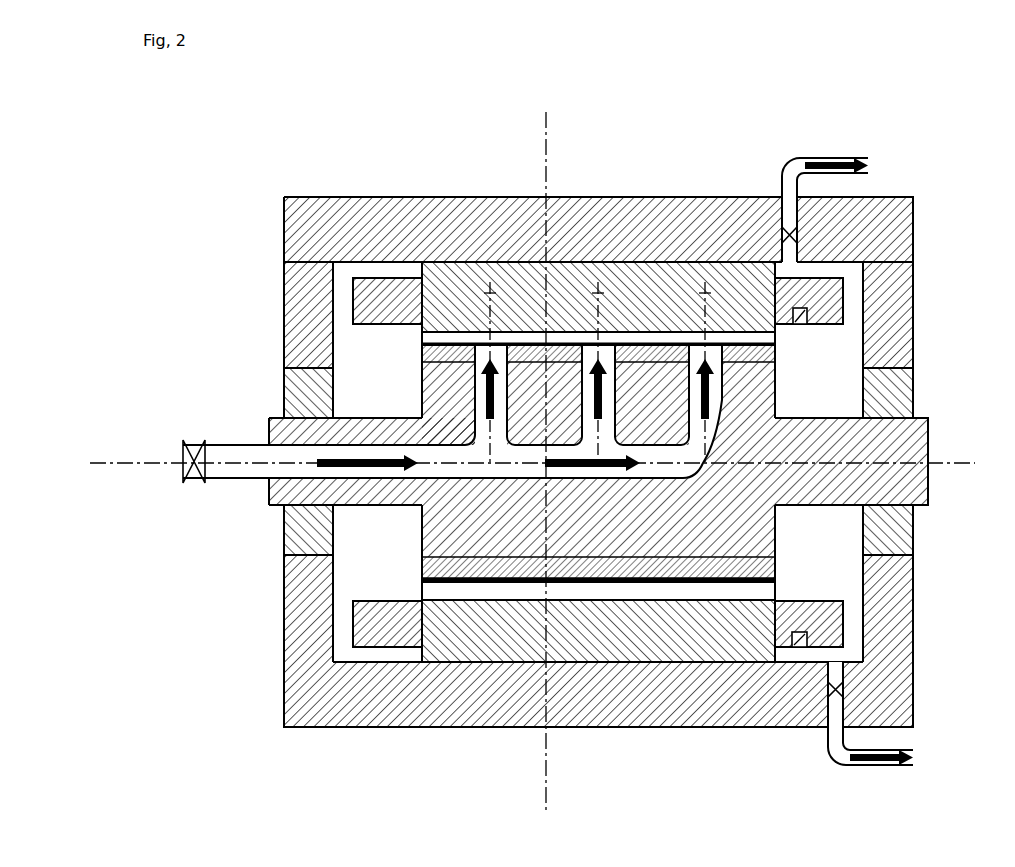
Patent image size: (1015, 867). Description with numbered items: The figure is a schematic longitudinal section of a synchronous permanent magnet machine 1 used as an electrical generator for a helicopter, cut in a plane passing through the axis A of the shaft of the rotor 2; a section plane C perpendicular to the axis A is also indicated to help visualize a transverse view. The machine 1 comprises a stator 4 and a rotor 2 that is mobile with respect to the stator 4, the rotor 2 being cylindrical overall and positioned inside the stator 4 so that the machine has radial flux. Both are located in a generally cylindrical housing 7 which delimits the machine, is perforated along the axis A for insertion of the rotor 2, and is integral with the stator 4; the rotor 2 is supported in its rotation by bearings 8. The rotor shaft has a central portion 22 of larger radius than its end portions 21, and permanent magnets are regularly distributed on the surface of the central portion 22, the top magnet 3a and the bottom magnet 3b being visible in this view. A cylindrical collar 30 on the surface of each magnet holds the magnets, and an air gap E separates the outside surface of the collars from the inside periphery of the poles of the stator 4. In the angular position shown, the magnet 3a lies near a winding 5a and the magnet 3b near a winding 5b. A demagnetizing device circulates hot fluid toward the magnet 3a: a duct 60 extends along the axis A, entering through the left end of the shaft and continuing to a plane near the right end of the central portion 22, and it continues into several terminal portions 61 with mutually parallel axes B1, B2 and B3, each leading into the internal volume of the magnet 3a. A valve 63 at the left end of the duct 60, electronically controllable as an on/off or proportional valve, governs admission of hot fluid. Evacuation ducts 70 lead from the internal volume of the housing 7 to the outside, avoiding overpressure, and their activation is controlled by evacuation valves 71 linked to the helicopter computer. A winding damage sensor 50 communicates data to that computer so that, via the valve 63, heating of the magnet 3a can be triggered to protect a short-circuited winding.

The synchronous permanent magnet machine 1 is at (159, 245).
The rotor 2 is at (930, 478).
The top magnet 3a is at (421, 356).
The bottom magnet 3b is at (423, 567).
The stator 4 is at (520, 300).
The winding 5a is at (845, 302).
The winding 5b is at (843, 621).
The housing 7 is at (890, 292).
The bearings 8 is at (890, 390).
The end portions of the shaft 21 is at (380, 497).
The central portion of the shaft 22 is at (755, 390).
The cylindrical collar 30 is at (786, 581).
The winding damage sensor 50 is at (808, 322).
The duct 60 is at (512, 478).
The terminal portions of duct 61 is at (586, 395).
The valve 63 is at (194, 440).
The evacuation ducts 70 is at (782, 160).
The evacuation valves 71 is at (780, 236).
The axis A is at (986, 447).
The axis of terminal duct portion B1 is at (476, 262).
The axis of terminal duct portion B2 is at (590, 262).
The axis of terminal duct portion B3 is at (688, 262).
The section plane C is at (548, 128).
The air gap E is at (416, 329).